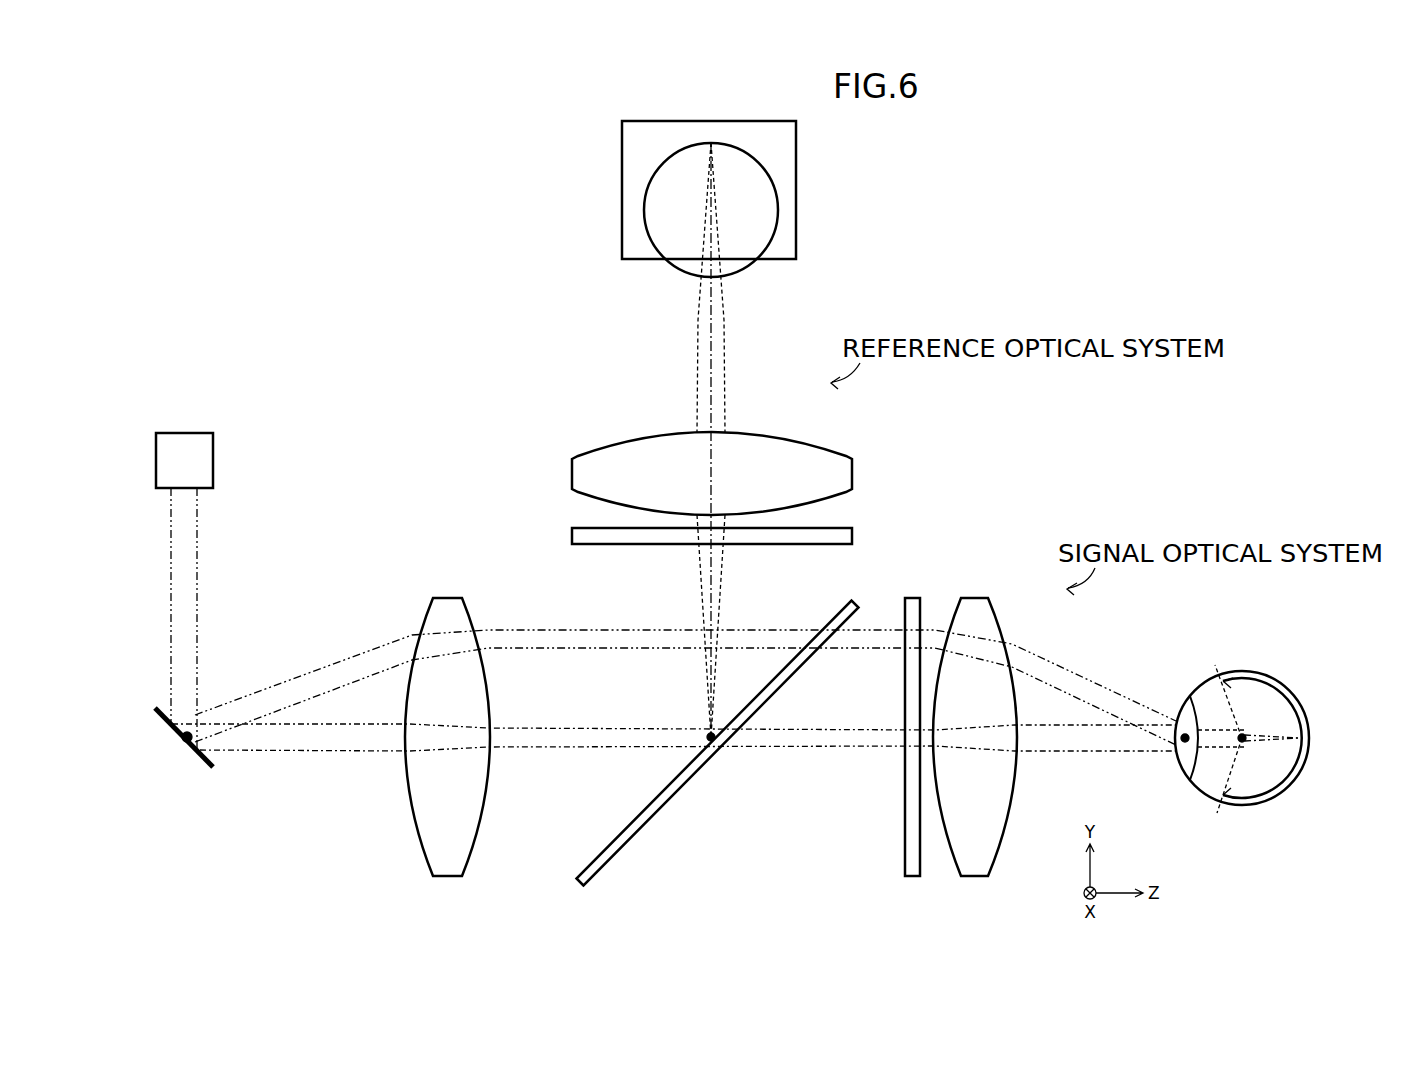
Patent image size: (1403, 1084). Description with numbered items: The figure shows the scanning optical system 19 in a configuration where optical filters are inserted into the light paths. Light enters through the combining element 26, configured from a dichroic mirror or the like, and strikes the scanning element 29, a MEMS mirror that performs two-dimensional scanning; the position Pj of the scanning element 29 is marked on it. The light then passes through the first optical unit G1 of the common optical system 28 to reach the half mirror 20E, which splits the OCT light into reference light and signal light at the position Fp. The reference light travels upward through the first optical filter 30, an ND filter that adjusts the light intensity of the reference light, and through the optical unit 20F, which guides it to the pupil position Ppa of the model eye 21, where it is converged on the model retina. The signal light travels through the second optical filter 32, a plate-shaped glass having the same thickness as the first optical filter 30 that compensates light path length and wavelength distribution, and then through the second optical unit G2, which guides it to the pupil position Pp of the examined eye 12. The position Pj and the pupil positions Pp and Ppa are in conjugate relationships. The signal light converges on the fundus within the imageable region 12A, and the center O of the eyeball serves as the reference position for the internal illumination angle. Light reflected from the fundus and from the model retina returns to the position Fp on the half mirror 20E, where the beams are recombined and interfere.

The examined eye 12 is at (1306, 722).
The imageable region 12A is at (1284, 766).
The scanning optical system 19 is at (366, 171).
The half mirror 20E is at (855, 604).
The optical unit 20F is at (852, 470).
The model eye 21 is at (796, 232).
The combining element 26 is at (213, 458).
The common optical system 28 is at (392, 560).
The scanning element 29 is at (210, 768).
The first optical filter 30 is at (600, 545).
The second optical filter 32 is at (904, 855).
The first optical unit G1 is at (448, 878).
The second optical unit G2 is at (975, 878).
The position of the scanning element Pj is at (183, 743).
The pupil position Pp is at (1186, 745).
The pupil position of the model eye Ppa is at (712, 265).
The position on the half mirror Fp is at (708, 733).
The center of the eyeball O is at (1244, 733).